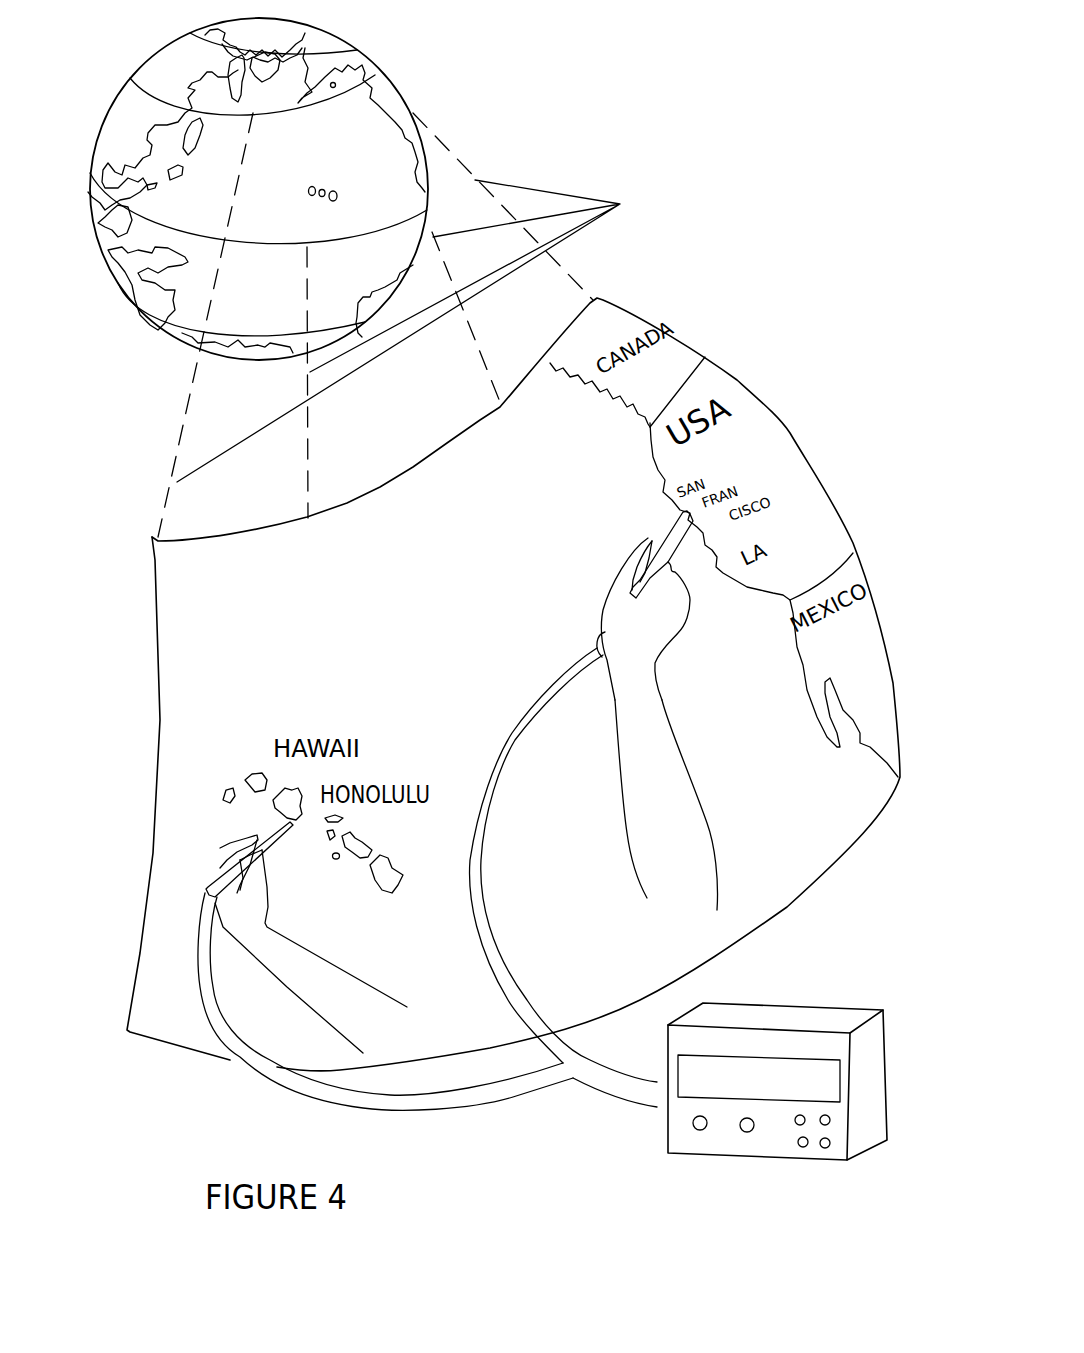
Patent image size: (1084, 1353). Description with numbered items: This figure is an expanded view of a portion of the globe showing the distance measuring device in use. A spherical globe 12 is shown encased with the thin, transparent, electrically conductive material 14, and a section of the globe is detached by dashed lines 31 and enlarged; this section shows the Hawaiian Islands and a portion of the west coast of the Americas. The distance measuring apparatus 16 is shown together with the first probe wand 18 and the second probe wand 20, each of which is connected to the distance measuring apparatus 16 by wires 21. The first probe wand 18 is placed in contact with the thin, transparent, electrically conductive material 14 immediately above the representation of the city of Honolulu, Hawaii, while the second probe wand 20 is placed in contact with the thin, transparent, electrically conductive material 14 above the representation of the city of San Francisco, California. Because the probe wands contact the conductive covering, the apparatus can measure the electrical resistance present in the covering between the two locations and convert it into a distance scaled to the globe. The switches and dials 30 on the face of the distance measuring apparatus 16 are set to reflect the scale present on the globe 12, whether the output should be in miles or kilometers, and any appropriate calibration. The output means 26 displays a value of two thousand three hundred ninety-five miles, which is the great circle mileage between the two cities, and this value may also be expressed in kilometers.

The globe 12 is at (130, 197).
The transparent, electrically conductive covering 14 is at (352, 50).
The dashed lines 31 is at (620, 204).
The second probe wand 20 is at (672, 540).
The first probe wand 18 is at (212, 883).
The wires 21 is at (490, 813).
The distance measuring apparatus 16 is at (807, 1079).
The output means 26 is at (817, 1070).
The switches and dials 30 is at (802, 1143).